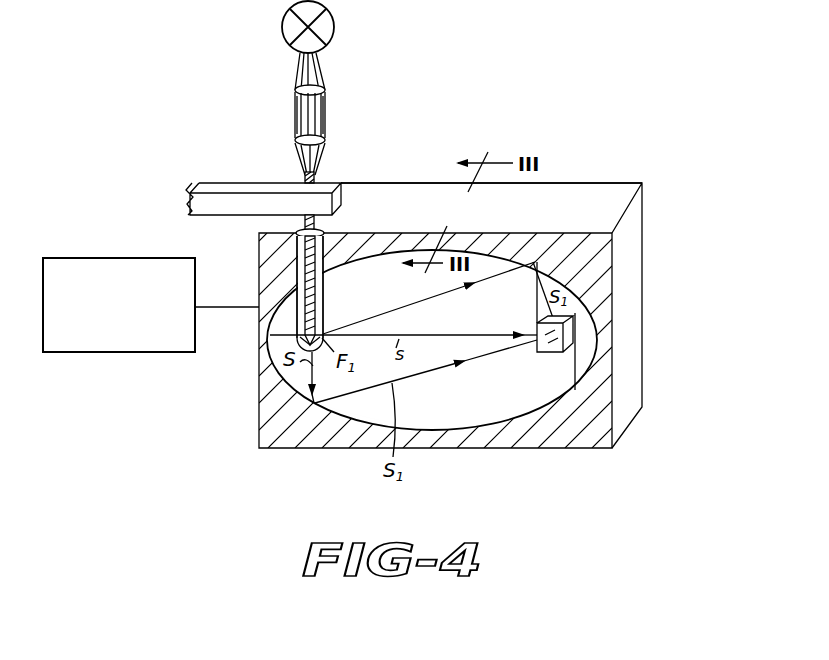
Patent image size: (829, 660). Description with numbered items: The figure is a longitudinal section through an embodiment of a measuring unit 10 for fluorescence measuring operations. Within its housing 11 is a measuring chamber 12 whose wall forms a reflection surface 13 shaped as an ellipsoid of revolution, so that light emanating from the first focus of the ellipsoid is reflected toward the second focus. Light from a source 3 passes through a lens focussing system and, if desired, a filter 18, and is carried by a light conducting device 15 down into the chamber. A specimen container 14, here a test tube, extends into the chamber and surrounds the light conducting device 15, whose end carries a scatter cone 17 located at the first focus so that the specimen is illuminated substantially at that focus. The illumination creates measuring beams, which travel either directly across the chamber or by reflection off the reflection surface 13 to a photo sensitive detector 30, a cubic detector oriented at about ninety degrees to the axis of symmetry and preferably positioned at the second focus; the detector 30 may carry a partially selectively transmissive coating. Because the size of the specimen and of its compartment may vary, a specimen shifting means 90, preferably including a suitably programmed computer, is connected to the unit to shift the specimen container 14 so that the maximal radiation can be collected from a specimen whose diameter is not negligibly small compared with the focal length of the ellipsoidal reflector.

The light source 3 is at (333, 21).
The measuring unit 10 is at (425, 168).
The housing 11 is at (596, 186).
The measuring chamber 12 is at (532, 432).
The reflection surface 13 is at (473, 428).
The specimen container 14 is at (295, 277).
The light conducting device 15 is at (336, 121).
The scatter cone 17 is at (300, 337).
The filter 18 is at (295, 115).
The photo sensitive detector 30 is at (565, 333).
The specimen compartment shifting means 90 is at (113, 258).